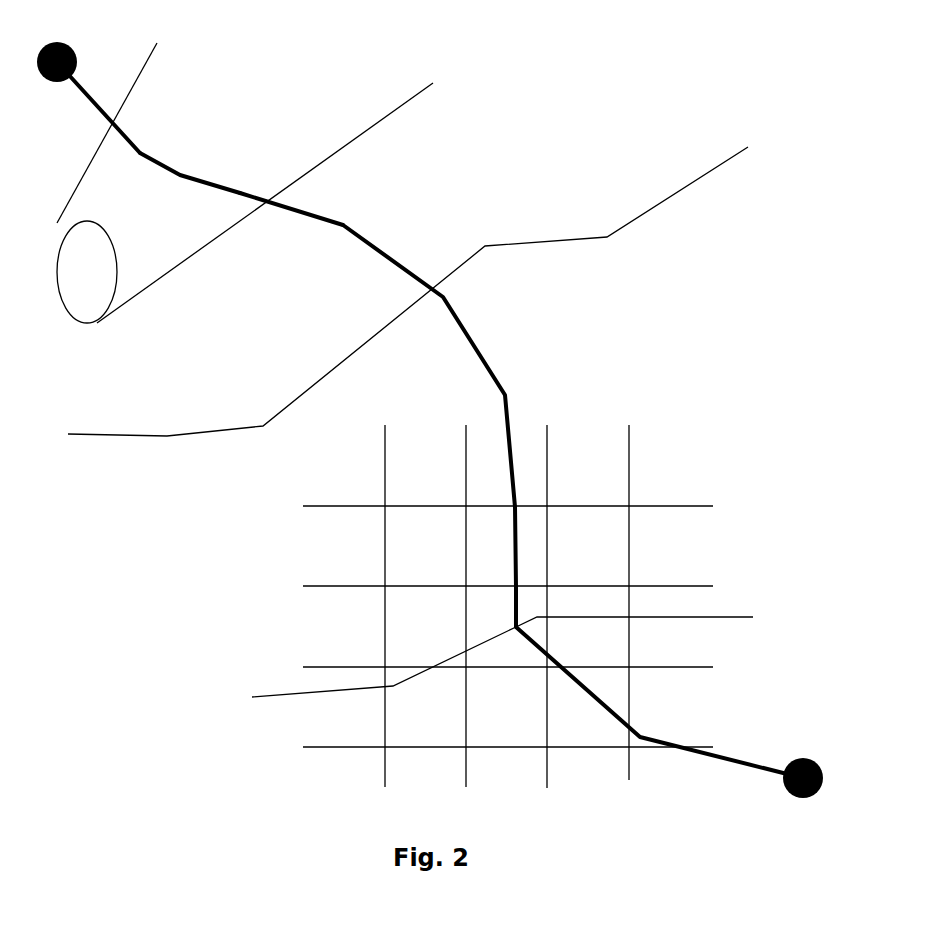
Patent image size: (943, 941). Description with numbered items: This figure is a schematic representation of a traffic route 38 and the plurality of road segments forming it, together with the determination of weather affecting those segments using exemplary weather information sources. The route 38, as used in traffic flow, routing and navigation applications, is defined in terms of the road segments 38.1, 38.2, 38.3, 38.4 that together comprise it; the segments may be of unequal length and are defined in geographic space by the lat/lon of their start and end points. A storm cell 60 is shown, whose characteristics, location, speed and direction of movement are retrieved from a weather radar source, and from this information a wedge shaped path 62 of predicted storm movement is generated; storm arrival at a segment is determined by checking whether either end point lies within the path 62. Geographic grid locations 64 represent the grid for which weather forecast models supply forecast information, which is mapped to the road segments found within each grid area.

The route 38 is at (430, 420).
The road segment 38.1 is at (100, 113).
The road segment 38.2 is at (180, 175).
The road segment 38.3 is at (282, 207).
The road segment 38.4 is at (387, 253).
The storm cell 60 is at (58, 285).
The wedge shaped path 62 is at (148, 285).
The geographic grid locations 64 is at (630, 467).